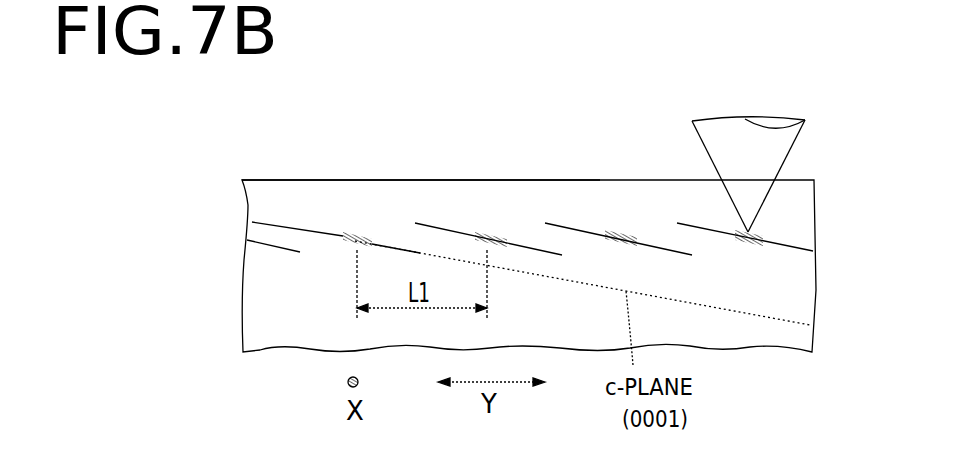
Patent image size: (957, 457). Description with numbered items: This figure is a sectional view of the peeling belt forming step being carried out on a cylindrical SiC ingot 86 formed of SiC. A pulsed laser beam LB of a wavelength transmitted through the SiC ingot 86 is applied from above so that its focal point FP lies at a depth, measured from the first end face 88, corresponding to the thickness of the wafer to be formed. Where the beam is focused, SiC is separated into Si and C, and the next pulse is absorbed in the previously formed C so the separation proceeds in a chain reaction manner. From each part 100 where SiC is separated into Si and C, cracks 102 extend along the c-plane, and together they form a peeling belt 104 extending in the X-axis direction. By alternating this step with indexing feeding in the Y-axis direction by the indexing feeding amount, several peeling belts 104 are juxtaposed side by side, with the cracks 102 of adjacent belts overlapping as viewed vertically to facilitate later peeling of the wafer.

The SiC ingot 86 is at (284, 180).
The first end face 88 is at (606, 179).
The part where SiC is separated into Si and C 100 is at (362, 234).
The cracks 102 is at (322, 232).
The peeling belt 104 is at (430, 118).
The pulsed laser beam LB is at (706, 154).
The focal point FP is at (752, 236).